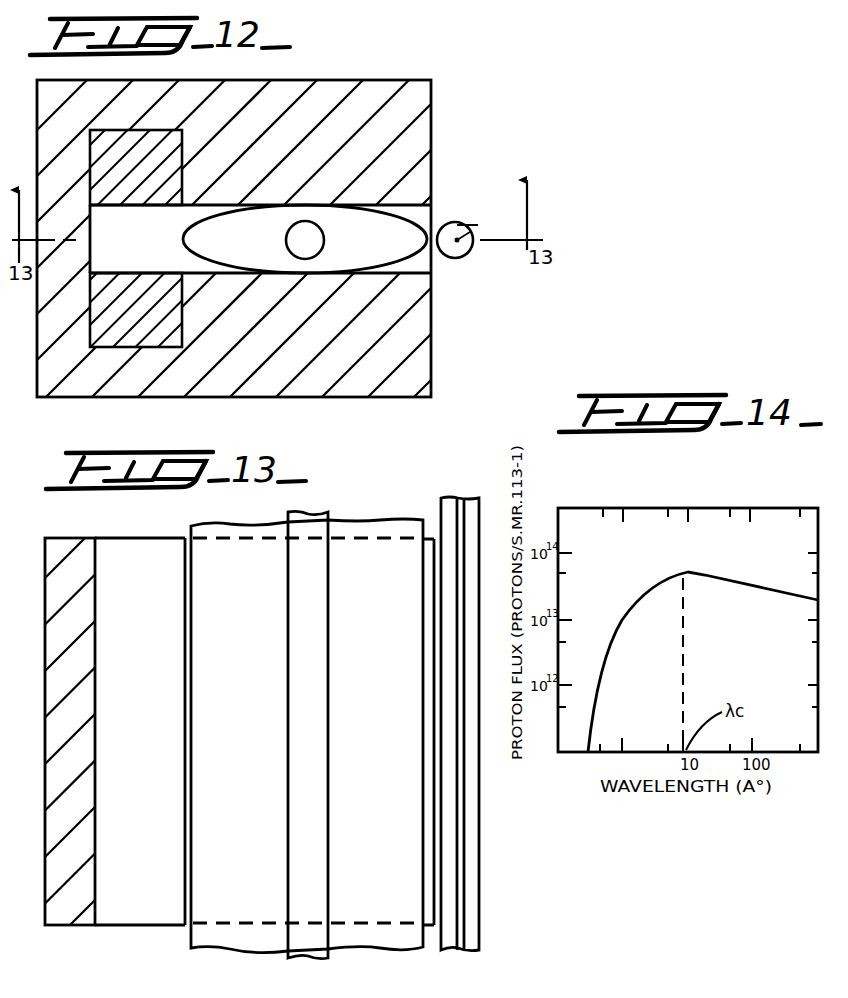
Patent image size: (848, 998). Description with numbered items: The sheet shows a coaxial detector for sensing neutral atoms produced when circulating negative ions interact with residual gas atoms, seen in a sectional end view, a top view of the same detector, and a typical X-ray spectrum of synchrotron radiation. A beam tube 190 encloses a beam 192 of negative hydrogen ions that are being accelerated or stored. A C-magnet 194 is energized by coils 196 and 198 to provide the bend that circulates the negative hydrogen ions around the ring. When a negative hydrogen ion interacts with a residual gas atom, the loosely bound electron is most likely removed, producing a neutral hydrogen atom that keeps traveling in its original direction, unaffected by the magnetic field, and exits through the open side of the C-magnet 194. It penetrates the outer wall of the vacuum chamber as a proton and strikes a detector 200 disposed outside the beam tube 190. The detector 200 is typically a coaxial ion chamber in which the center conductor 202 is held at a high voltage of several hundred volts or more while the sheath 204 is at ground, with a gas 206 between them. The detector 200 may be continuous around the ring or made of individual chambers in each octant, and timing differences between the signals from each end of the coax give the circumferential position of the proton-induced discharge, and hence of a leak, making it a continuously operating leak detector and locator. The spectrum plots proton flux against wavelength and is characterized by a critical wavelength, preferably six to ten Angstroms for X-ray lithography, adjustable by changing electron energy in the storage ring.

In FIG. 12, the beam tube 190 is at (420, 222).
In FIG. 13, the beam tube 190 is at (242, 940).
In FIG. 12, the beam 192 is at (317, 254).
In FIG. 13, the beam 192 is at (318, 790).
In FIG. 12, the C-magnet 194 is at (405, 397).
In FIG. 13, the C-magnet 194 is at (77, 538).
In FIG. 12, the coil 196 is at (150, 272).
In FIG. 13, the coil 196 is at (139, 570).
In FIG. 12, the coil 198 is at (173, 210).
In FIG. 12, the detector 200 is at (462, 252).
In FIG. 12, the center conductor 202 is at (490, 222).
In FIG. 13, the center conductor 202 is at (466, 925).
In FIG. 12, the sheath 204 is at (448, 258).
In FIG. 13, the sheath 204 is at (508, 878).
In FIG. 12, the gas 206 is at (470, 242).